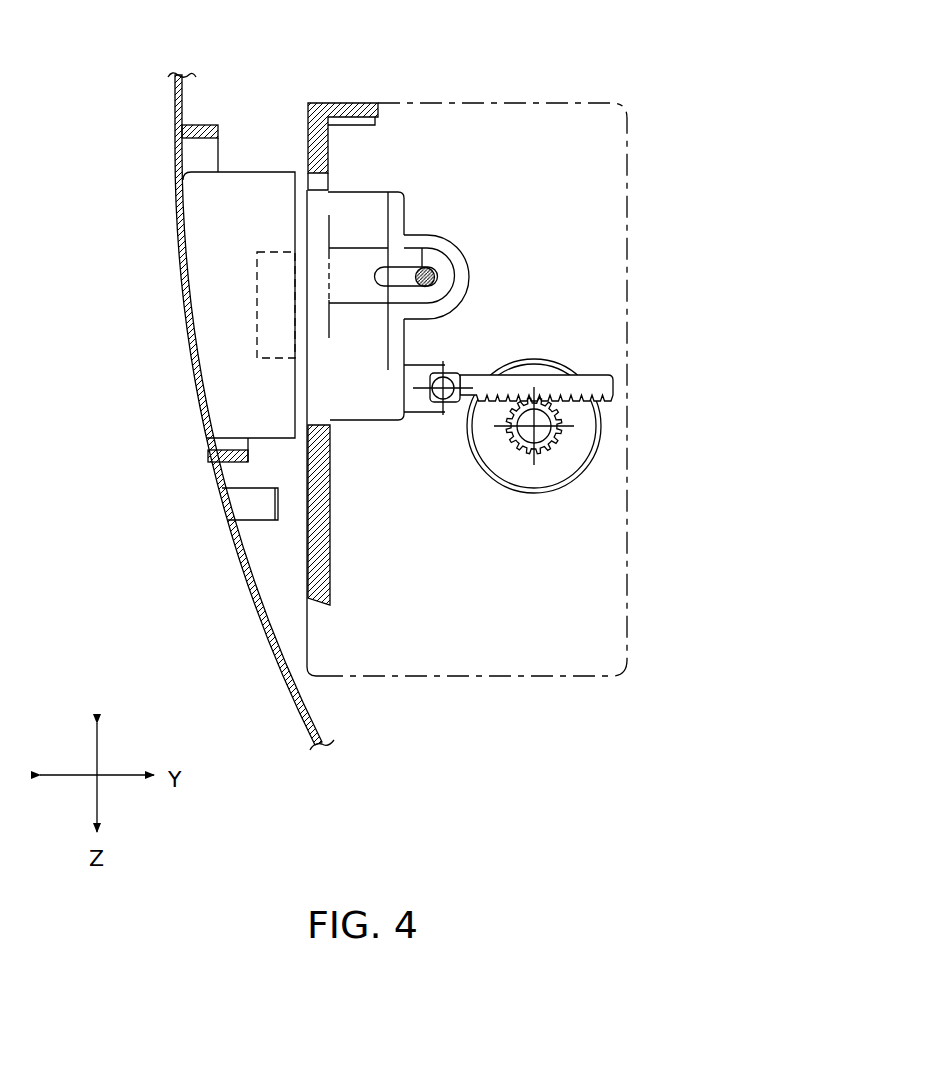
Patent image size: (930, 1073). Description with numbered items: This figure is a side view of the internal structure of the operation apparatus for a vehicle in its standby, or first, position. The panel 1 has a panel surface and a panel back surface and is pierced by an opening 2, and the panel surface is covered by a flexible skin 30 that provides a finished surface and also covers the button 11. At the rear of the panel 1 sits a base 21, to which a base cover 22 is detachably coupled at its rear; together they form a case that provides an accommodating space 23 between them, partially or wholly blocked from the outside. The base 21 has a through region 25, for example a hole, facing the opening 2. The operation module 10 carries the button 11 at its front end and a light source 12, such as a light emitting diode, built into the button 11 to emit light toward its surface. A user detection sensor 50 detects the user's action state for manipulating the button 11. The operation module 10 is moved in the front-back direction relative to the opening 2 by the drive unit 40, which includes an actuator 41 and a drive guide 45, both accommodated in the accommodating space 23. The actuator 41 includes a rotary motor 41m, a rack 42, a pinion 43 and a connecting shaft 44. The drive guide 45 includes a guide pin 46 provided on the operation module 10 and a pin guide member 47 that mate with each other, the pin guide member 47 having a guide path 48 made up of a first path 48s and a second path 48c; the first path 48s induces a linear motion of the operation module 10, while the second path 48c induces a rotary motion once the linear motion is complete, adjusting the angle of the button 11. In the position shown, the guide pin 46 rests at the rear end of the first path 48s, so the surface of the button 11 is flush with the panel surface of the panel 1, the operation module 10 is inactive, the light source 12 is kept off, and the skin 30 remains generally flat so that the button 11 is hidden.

The panel 1 is at (318, 700).
The opening 2 is at (201, 163).
The operation module 10 is at (250, 156).
The button 11 is at (200, 238).
The light source 12 is at (262, 348).
The base 21 is at (323, 183).
The base cover 22 is at (526, 102).
The accommodating space 23 is at (482, 622).
The through region 25 is at (352, 258).
The skin 30 is at (252, 620).
The drive unit 40 is at (585, 287).
The actuator 41 is at (590, 426).
The rotary motor 41m is at (585, 427).
The rack 42 is at (603, 383).
The pinion 43 is at (560, 442).
The connecting shaft 44 is at (443, 402).
The drive guide 45 is at (471, 231).
The guide pin 46 is at (436, 277).
The pin guide member 47 is at (397, 258).
The guide path 48 is at (454, 231).
The second path 48c is at (398, 266).
The first path 48s is at (442, 236).
The user detection sensor 50 is at (235, 503).